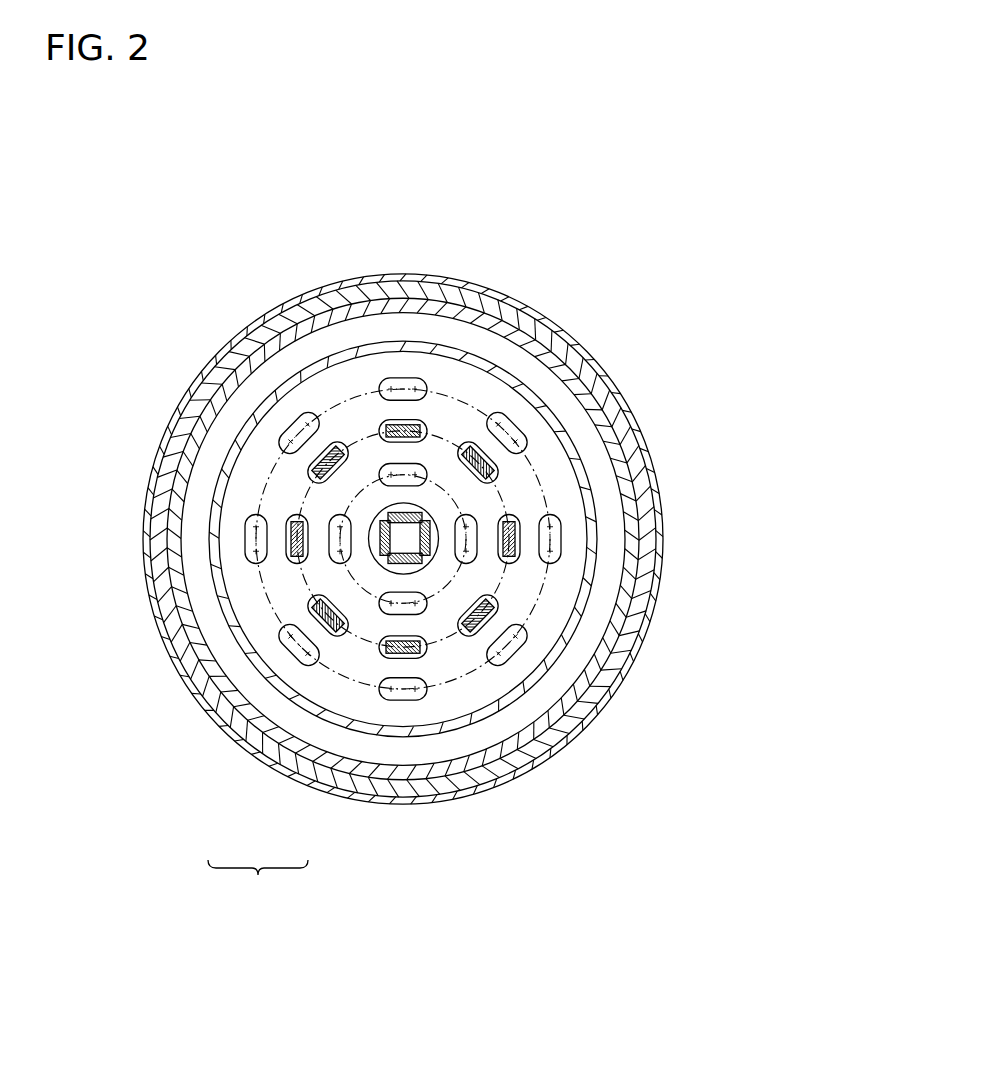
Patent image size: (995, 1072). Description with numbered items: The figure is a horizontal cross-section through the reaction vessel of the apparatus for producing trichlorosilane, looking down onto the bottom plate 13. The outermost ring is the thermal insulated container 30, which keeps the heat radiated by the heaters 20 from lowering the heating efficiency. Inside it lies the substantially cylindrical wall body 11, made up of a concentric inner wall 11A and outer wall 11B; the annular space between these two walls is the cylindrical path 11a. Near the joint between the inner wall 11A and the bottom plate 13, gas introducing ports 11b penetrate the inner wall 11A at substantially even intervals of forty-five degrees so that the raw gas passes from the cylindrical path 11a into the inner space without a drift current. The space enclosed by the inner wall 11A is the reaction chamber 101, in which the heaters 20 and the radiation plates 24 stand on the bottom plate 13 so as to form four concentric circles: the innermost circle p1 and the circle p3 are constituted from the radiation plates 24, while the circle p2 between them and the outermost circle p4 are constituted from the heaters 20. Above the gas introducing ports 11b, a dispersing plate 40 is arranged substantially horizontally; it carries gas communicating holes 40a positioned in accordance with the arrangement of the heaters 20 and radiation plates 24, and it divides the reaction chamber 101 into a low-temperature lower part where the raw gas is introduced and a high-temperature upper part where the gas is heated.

The wall body 11 is at (258, 883).
The inner wall 11A is at (317, 708).
The outer wall 11B is at (333, 754).
The cylindrical path 11a is at (613, 493).
The gas introducing ports 11b is at (551, 399).
The bottom plate 13 is at (600, 613).
The heaters 20 is at (382, 440).
The radiation plates 24 is at (297, 544).
The thermal insulated container 30 is at (208, 690).
The dispersing plate 40 is at (497, 683).
The gas communicating holes 40a is at (433, 532).
The reaction chamber 101 is at (548, 366).
The innermost circle p1 is at (494, 403).
The circle p2 is at (412, 512).
The circle p3 is at (403, 473).
The outermost circle p4 is at (378, 432).